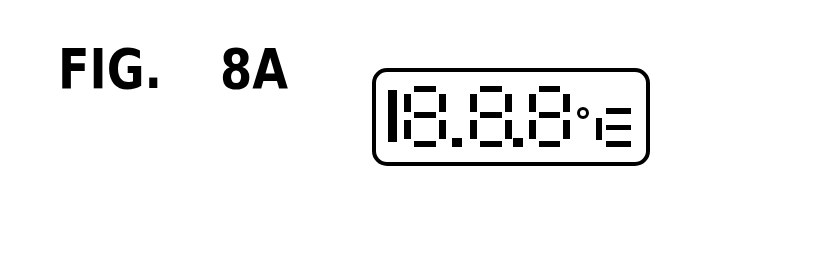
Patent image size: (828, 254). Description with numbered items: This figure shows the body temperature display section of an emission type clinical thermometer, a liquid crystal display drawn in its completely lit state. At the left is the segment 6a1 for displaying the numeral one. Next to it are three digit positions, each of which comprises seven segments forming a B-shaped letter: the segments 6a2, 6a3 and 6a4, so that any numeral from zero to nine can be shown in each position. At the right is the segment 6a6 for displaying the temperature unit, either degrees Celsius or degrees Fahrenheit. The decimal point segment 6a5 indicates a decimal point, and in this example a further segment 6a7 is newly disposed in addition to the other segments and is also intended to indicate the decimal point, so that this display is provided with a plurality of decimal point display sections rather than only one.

The segment for displaying numeral "1" 6a1 is at (393, 143).
The seven-segment digit display 6a2 is at (423, 86).
The seven-segment digit display 6a3 is at (489, 144).
The seven-segment digit display 6a4 is at (547, 86).
The decimal point segment 6a5 is at (520, 145).
The temperature unit segment 6a6 is at (602, 102).
The additional decimal point segment 6a7 is at (457, 144).